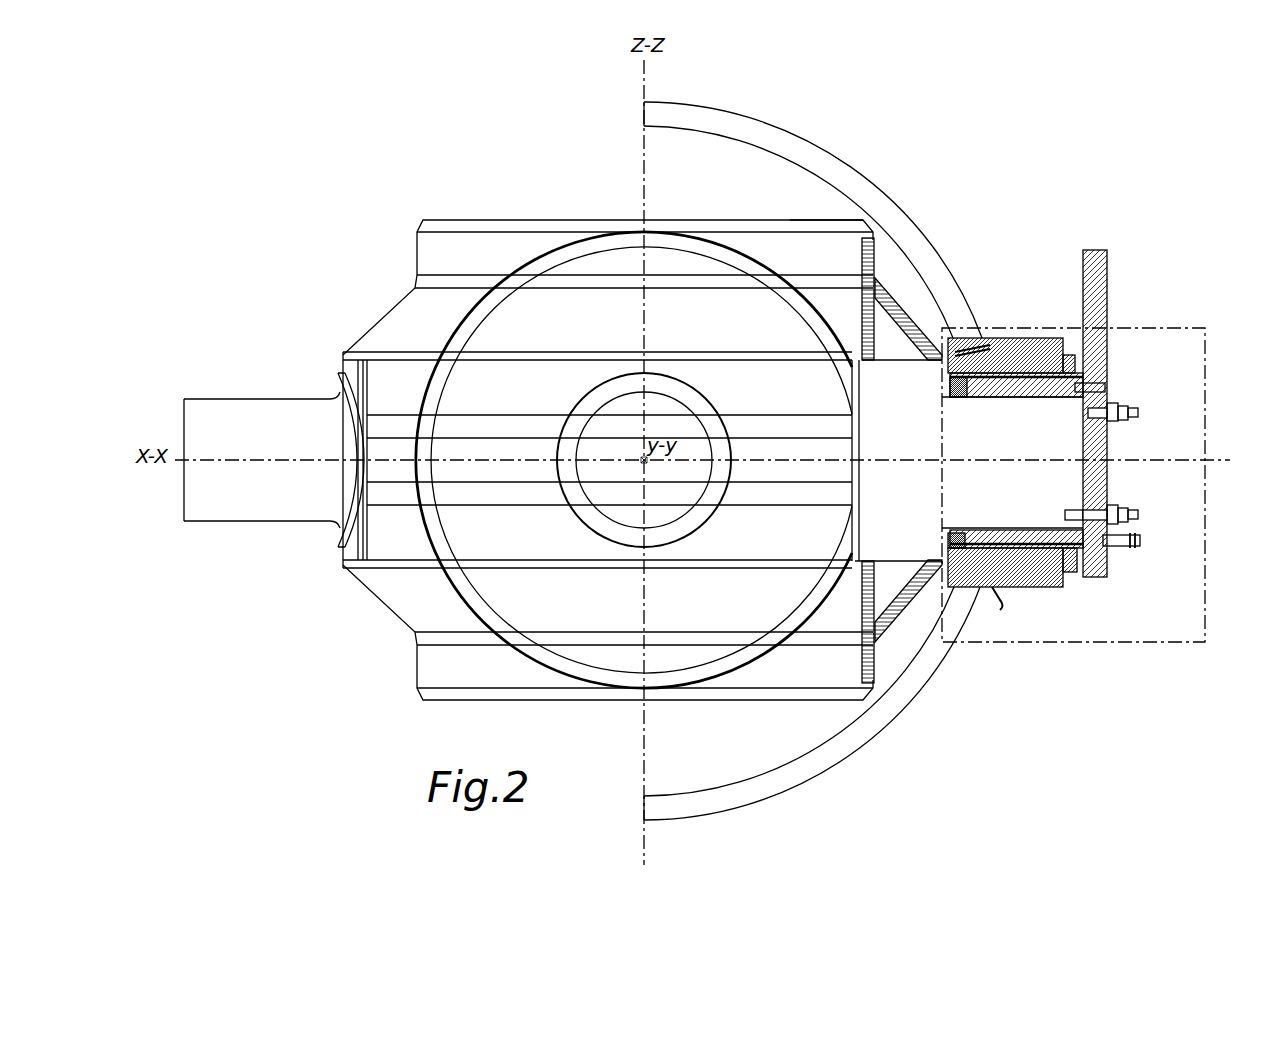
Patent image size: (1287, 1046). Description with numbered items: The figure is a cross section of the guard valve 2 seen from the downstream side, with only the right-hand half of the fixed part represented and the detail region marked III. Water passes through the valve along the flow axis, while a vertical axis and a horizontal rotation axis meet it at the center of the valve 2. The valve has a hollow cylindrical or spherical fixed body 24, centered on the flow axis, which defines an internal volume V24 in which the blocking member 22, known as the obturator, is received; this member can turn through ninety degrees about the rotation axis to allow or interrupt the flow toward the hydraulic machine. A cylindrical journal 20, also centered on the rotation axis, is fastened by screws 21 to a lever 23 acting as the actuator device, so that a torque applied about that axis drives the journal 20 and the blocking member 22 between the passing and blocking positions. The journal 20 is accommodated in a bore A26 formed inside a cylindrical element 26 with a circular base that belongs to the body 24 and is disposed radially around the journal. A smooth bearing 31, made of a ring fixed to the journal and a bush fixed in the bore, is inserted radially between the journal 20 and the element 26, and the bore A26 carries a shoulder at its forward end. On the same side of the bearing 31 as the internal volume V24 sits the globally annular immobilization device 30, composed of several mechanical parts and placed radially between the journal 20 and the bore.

The guard valve 2 is at (385, 188).
The journal 20 is at (1072, 452).
The screws 21 is at (1125, 408).
The blocking member 22 is at (672, 313).
The lever 23 is at (1097, 272).
The body 24 is at (810, 160).
The internal volume V24 is at (795, 222).
The cylindrical element 26 is at (1037, 572).
The bore A26 is at (1003, 378).
The immobilization device 30 is at (958, 338).
The smooth bearing 31 is at (1040, 357).
The detail view III boundary III is at (1207, 398).